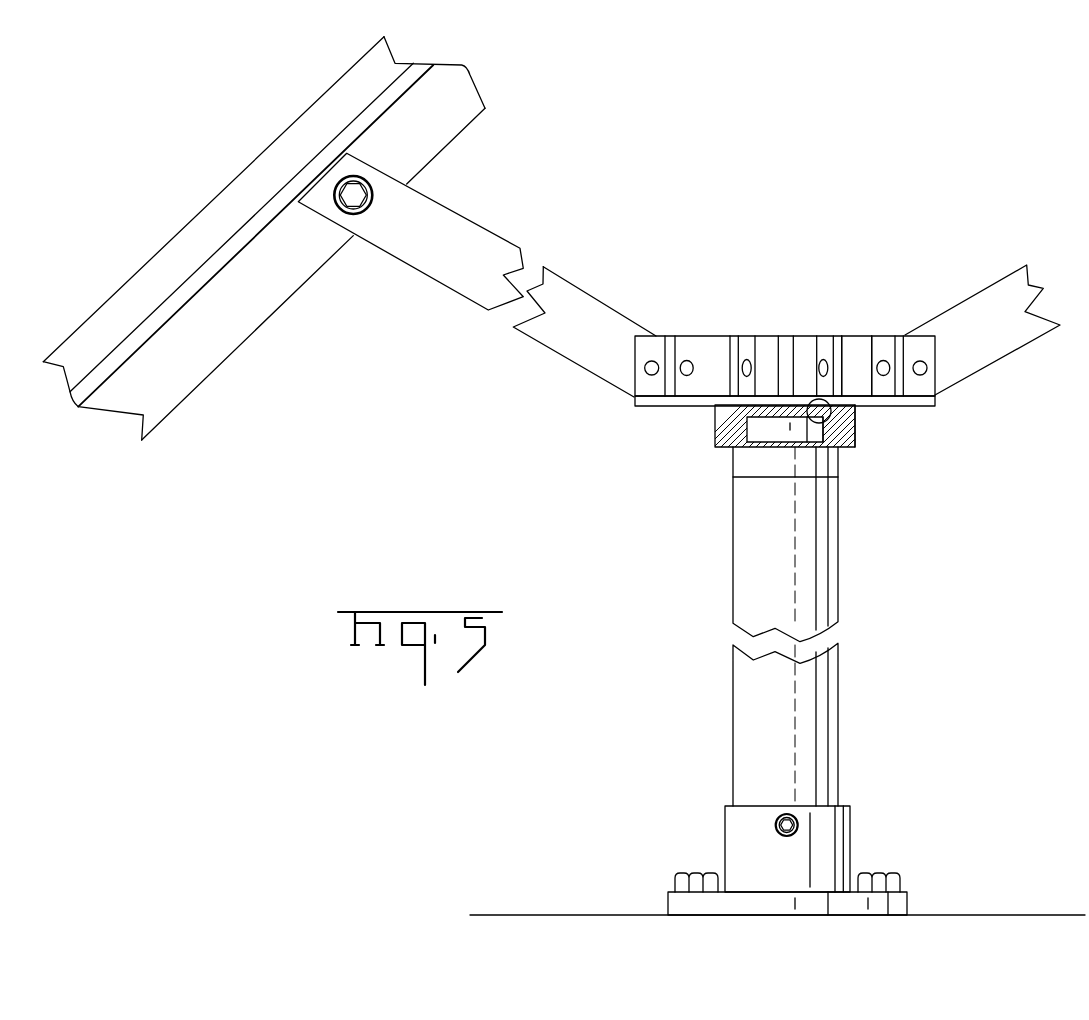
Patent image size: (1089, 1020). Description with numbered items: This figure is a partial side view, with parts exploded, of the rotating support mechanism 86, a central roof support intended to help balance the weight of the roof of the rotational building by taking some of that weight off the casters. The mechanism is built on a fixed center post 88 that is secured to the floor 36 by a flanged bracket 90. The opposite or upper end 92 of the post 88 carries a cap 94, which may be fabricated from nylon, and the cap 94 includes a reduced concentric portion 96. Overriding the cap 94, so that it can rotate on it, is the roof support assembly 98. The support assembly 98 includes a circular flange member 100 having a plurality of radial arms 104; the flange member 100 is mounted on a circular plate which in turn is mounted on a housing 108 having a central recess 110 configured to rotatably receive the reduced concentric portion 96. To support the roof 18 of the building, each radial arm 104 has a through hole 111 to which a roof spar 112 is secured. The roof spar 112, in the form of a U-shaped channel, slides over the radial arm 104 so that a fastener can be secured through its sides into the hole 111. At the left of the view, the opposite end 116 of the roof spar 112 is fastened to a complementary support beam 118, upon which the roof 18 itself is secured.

The roof 18 is at (243, 182).
The opposite end 116 is at (445, 214).
The roof spar 112 is at (452, 303).
The complementary support beam 118 is at (252, 323).
The rotating support mechanism 86 is at (791, 327).
The radial arm 104 is at (650, 347).
The circular flange member 100 is at (852, 335).
The roof support assembly 98 is at (905, 332).
The through hole 111 is at (930, 366).
The housing 108 is at (857, 425).
The reduced concentric portion 96 is at (747, 427).
The upper end 92 is at (843, 440).
The central recess 110 is at (808, 422).
The cap 94 is at (744, 467).
The fixed center post 88 is at (840, 570).
The floor 36 is at (626, 912).
The flanged bracket 90 is at (897, 900).